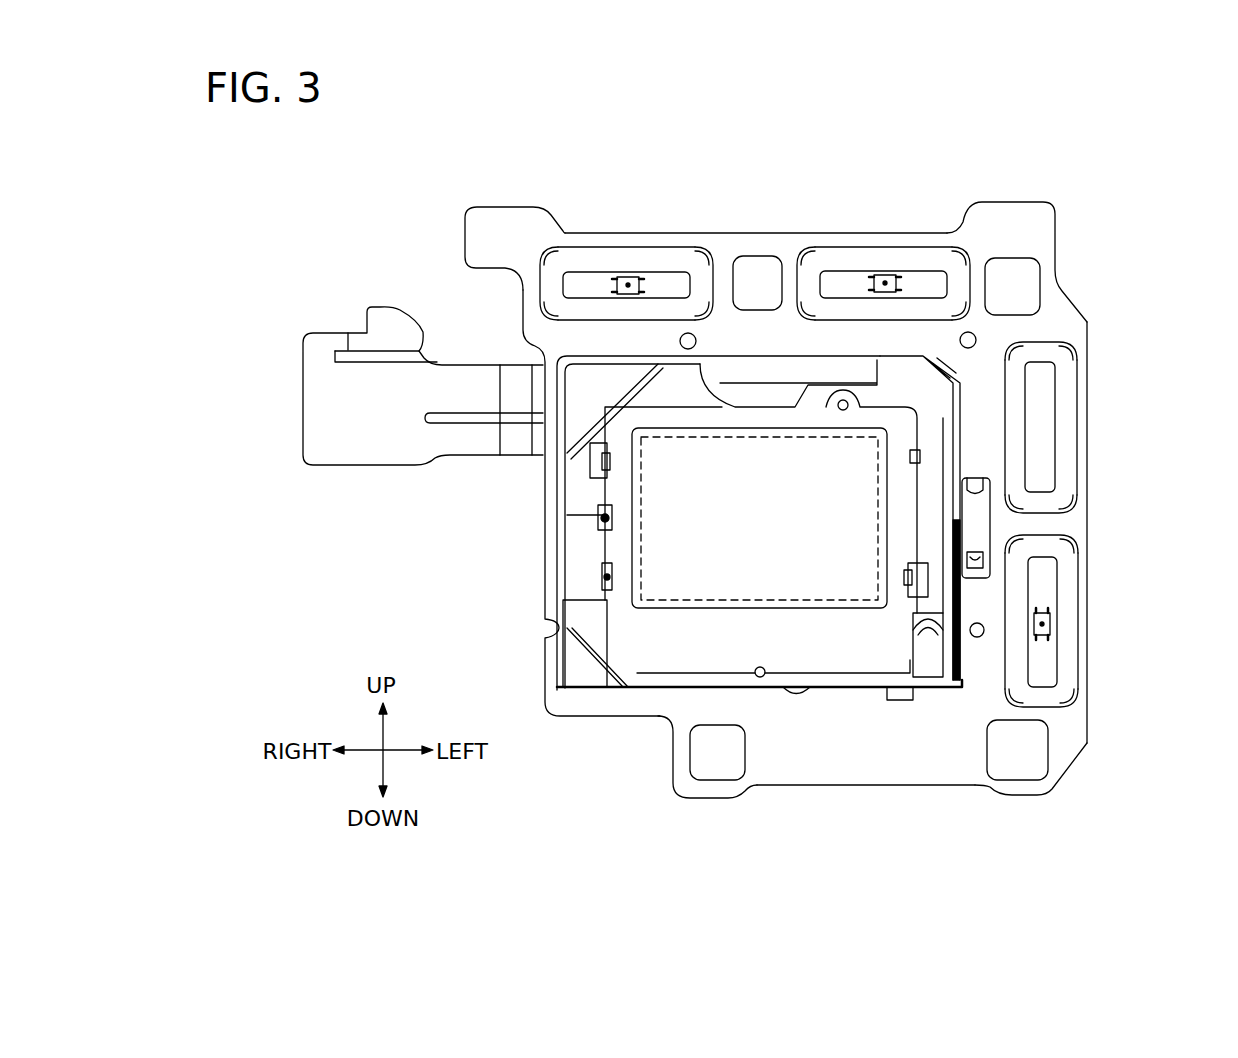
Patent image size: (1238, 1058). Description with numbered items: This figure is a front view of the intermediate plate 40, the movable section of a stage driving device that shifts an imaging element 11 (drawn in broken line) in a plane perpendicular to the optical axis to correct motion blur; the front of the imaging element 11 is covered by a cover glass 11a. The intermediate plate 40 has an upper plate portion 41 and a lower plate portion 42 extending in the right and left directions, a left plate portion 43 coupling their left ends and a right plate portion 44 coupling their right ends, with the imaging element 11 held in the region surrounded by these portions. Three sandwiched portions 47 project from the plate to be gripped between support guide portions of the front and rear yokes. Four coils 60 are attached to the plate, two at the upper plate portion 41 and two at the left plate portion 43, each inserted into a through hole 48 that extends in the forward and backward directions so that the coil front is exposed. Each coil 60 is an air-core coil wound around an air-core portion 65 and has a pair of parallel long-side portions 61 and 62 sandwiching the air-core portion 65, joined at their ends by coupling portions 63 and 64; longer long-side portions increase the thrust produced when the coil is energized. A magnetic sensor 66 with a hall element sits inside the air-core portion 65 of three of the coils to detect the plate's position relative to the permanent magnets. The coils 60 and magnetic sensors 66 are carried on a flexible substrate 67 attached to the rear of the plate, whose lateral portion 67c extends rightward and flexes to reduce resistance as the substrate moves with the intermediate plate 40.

The imaging element 11 is at (685, 609).
The cover glass 11a is at (693, 532).
The intermediate plate 40 is at (1055, 203).
The upper plate portion 41 is at (783, 233).
The lower plate portion 42 is at (878, 773).
The left plate portion 43 is at (1088, 488).
The right plate portion 44 is at (548, 497).
The sandwiched portion 47 is at (505, 218).
The through hole 48 is at (557, 247).
The coil 60 is at (577, 250).
The long-side portion 61 is at (667, 262).
The long-side portion 62 is at (593, 317).
The coupling portion 63 is at (553, 287).
The coupling portion 64 is at (700, 280).
The air-core portion 65 is at (598, 280).
The magnetic sensor 66 is at (632, 278).
The flexible substrate 67 is at (415, 404).
The lateral portion 67c is at (378, 430).